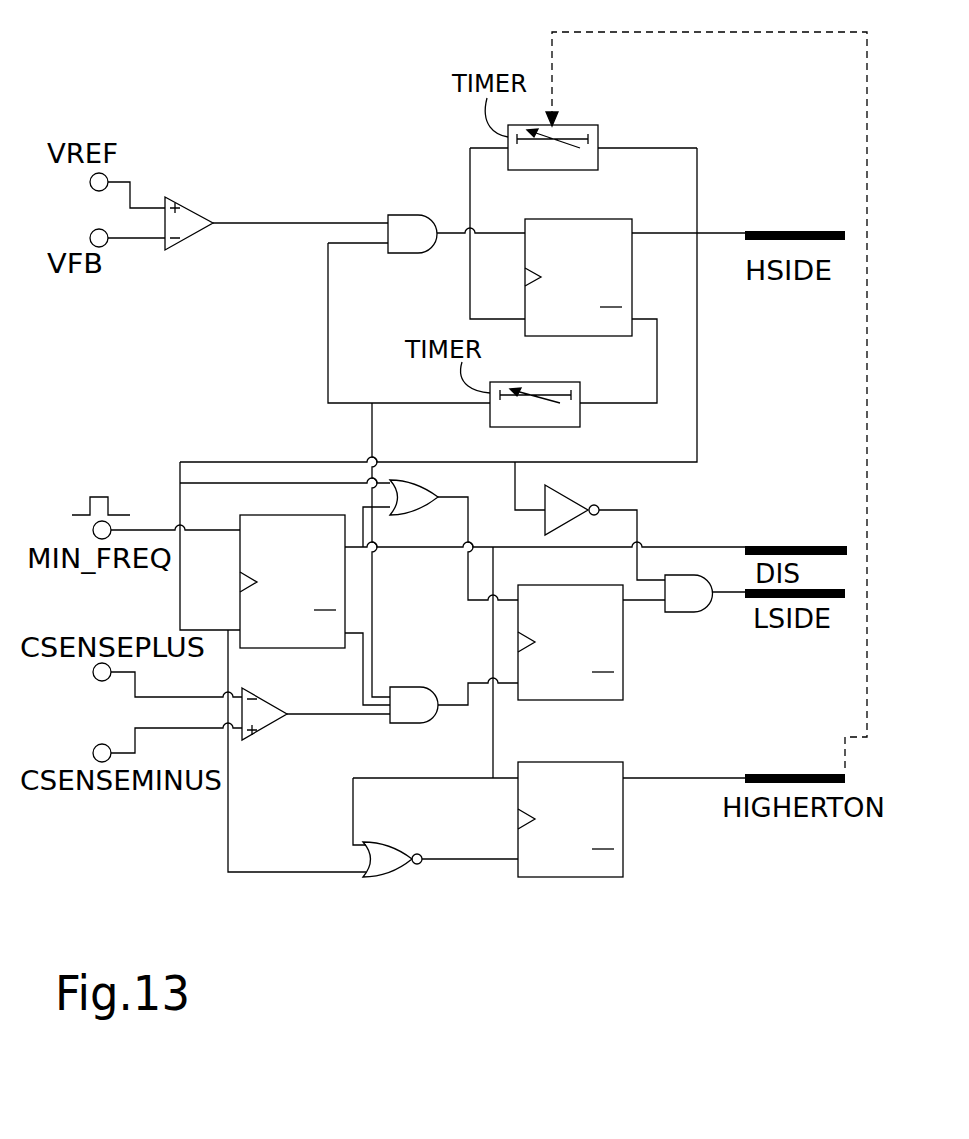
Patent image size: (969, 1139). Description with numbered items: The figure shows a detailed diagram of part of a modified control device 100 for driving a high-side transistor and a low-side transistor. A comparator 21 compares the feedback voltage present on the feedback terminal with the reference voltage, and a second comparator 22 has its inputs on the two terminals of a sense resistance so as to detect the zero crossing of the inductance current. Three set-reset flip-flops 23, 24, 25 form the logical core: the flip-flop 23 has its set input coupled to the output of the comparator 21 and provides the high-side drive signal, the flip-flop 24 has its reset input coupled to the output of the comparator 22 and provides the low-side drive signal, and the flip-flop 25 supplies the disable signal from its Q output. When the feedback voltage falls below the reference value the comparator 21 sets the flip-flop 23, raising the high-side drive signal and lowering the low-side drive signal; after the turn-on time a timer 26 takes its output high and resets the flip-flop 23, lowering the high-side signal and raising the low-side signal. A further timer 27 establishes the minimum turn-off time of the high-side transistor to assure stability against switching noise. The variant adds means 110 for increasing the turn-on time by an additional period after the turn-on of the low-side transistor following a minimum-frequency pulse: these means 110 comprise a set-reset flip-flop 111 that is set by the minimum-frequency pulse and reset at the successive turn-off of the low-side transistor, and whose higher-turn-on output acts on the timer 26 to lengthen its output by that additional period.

The control device 100 is at (154, 81).
The comparator 21 is at (193, 220).
The comparator 22 is at (260, 718).
The set-reset flip-flop 23 is at (615, 227).
The set-reset flip-flop 24 is at (590, 635).
The set-reset flip-flop 25 is at (312, 535).
The timer 26 is at (593, 130).
The timer 27 is at (540, 422).
The means for increasing the turn-on time 110 is at (566, 902).
The set-reset flip-flop 111 is at (590, 812).